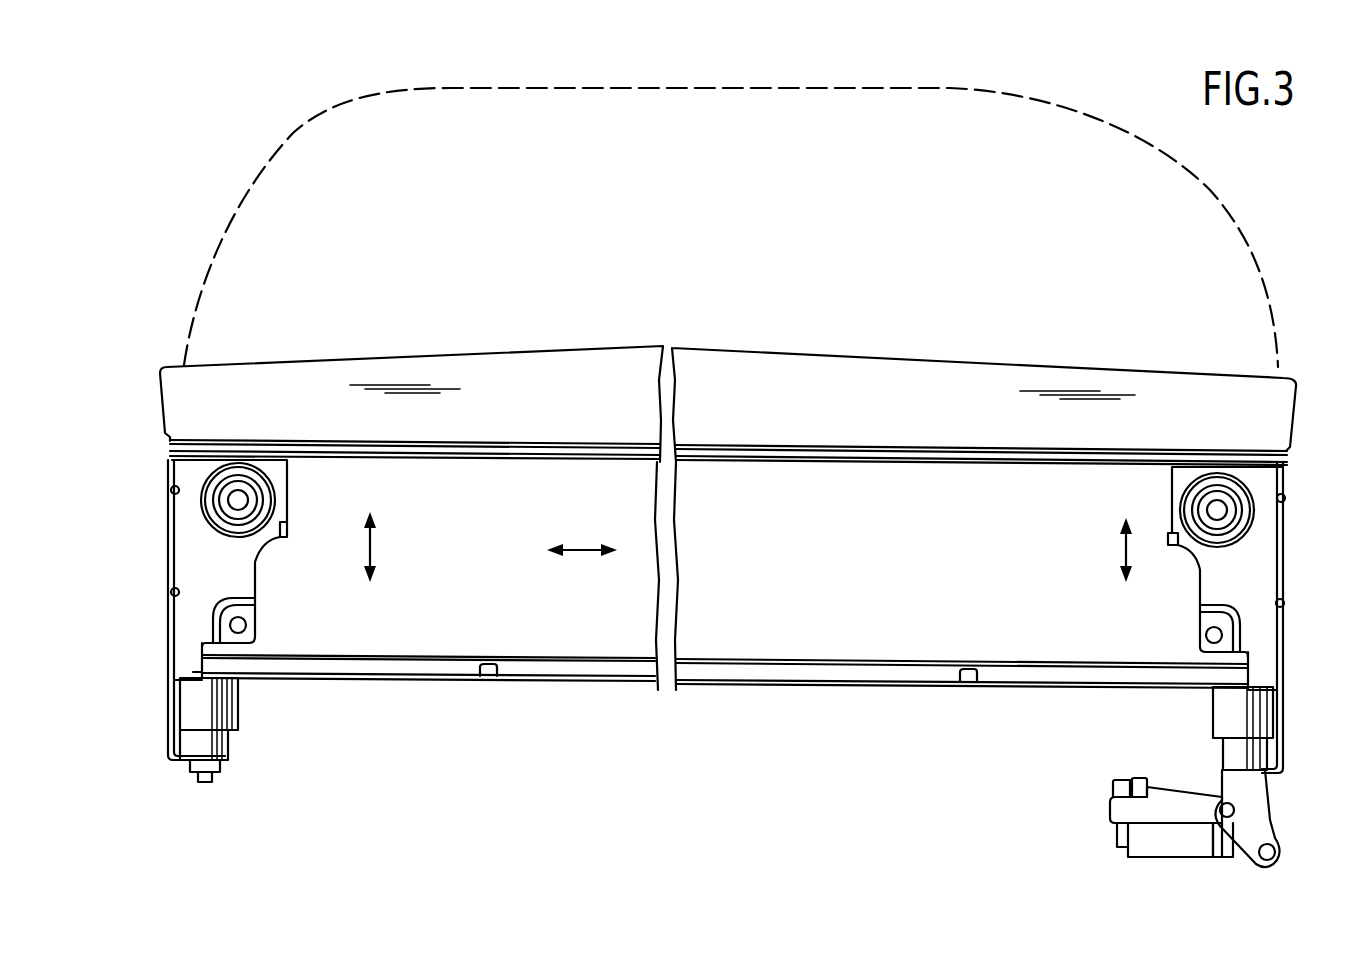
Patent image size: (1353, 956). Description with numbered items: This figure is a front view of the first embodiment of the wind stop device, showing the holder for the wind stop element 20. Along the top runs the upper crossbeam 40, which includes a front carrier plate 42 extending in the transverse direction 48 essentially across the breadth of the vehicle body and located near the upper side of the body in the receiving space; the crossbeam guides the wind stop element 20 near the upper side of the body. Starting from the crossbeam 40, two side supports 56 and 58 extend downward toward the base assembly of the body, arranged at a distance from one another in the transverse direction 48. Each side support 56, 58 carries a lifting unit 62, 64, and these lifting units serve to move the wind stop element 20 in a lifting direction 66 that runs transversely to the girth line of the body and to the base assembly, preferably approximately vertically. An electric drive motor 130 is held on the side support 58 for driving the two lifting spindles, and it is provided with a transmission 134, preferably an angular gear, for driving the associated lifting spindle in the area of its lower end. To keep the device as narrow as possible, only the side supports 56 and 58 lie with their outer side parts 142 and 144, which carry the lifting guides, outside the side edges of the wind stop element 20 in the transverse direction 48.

The wind stop element 20 is at (540, 620).
The upper crossbeam 40 is at (878, 375).
The front carrier plate 42 is at (945, 405).
The transverse direction 48 is at (590, 548).
The side support 56 is at (215, 571).
The side support 58 is at (1213, 588).
The lifting unit 62 is at (253, 704).
The lifting unit 64 is at (1196, 718).
The lifting direction 66 is at (377, 545).
The electric drive motor 130 is at (1118, 832).
The transmission 134 is at (1253, 820).
The outer side part 142 is at (172, 543).
The outer side part 144 is at (1290, 545).